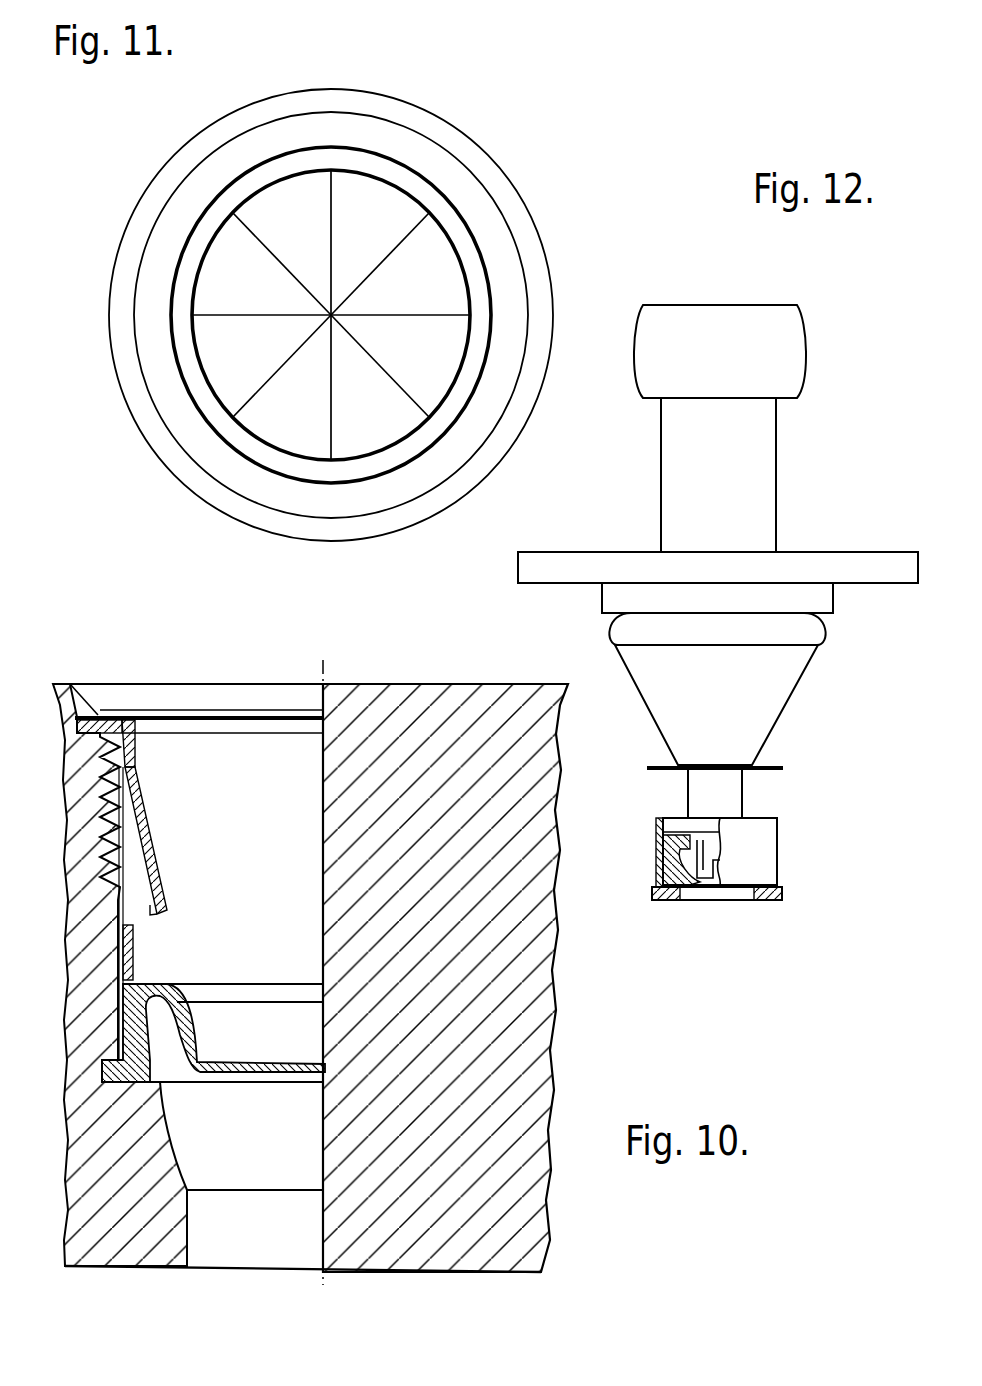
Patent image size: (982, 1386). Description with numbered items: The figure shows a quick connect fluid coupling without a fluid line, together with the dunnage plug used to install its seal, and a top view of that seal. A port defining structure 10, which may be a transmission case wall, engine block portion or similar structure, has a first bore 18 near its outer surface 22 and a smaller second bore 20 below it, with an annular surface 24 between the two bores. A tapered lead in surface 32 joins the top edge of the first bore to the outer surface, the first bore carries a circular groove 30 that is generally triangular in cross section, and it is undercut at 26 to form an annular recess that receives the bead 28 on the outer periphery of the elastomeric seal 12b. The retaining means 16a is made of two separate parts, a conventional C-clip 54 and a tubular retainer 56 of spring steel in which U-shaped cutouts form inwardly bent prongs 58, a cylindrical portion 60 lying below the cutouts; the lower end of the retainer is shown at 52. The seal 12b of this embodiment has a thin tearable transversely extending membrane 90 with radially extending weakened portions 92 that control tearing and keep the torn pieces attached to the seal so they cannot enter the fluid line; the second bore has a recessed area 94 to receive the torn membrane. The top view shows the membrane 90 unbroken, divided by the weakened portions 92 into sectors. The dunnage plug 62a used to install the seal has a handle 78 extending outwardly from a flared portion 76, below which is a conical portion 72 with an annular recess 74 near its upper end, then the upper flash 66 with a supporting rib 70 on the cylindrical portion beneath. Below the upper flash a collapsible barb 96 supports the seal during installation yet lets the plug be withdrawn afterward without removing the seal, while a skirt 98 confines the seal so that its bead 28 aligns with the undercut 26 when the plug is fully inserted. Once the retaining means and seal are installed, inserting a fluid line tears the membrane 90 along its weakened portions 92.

In FIG. 10, the port defining structure 10 is at (70, 813).
In FIG. 11, the elastomeric seal 12b is at (460, 128).
In FIG. 12, the elastomeric seal 12b is at (688, 900).
In FIG. 10, the elastomeric seal 12b is at (175, 984).
In FIG. 10, the retaining means 16a is at (168, 800).
In FIG. 10, the first bore 18 is at (105, 895).
In FIG. 10, the second bore 20 is at (187, 1233).
In FIG. 10, the outer surface 22 is at (65, 683).
In FIG. 10, the annular surface 24 is at (165, 1082).
In FIG. 10, the undercut 26 is at (103, 1063).
In FIG. 12, the bead 28 is at (652, 892).
In FIG. 10, the bead 28 is at (110, 1082).
In FIG. 10, the circular groove 30 is at (77, 725).
In FIG. 10, the tapered lead in surface 32 is at (97, 710).
In FIG. 10, the skirt lower end 52 is at (140, 910).
In FIG. 10, the C-clip 54 is at (118, 715).
In FIG. 10, the tubular retainer 56 is at (137, 762).
In FIG. 10, the prongs 58 is at (162, 870).
In FIG. 10, the cylindrical portion 60 is at (122, 950).
In FIG. 12, the dunnage plug 62a is at (842, 362).
In FIG. 12, the upper flash 66 is at (768, 772).
In FIG. 12, the supporting rib 70 is at (675, 820).
In FIG. 12, the conical portion 72 is at (780, 708).
In FIG. 12, the annular recess 74 is at (818, 624).
In FIG. 12, the flared portion 76 is at (862, 561).
In FIG. 12, the handle 78 is at (772, 449).
In FIG. 11, the membrane 90 is at (213, 258).
In FIG. 10, the membrane 90 is at (250, 1064).
In FIG. 11, the weakened portions 92 is at (328, 236).
In FIG. 10, the recessed area 94 is at (180, 1152).
In FIG. 12, the collapsible barb 96 is at (705, 895).
In FIG. 12, the skirt 98 is at (770, 850).